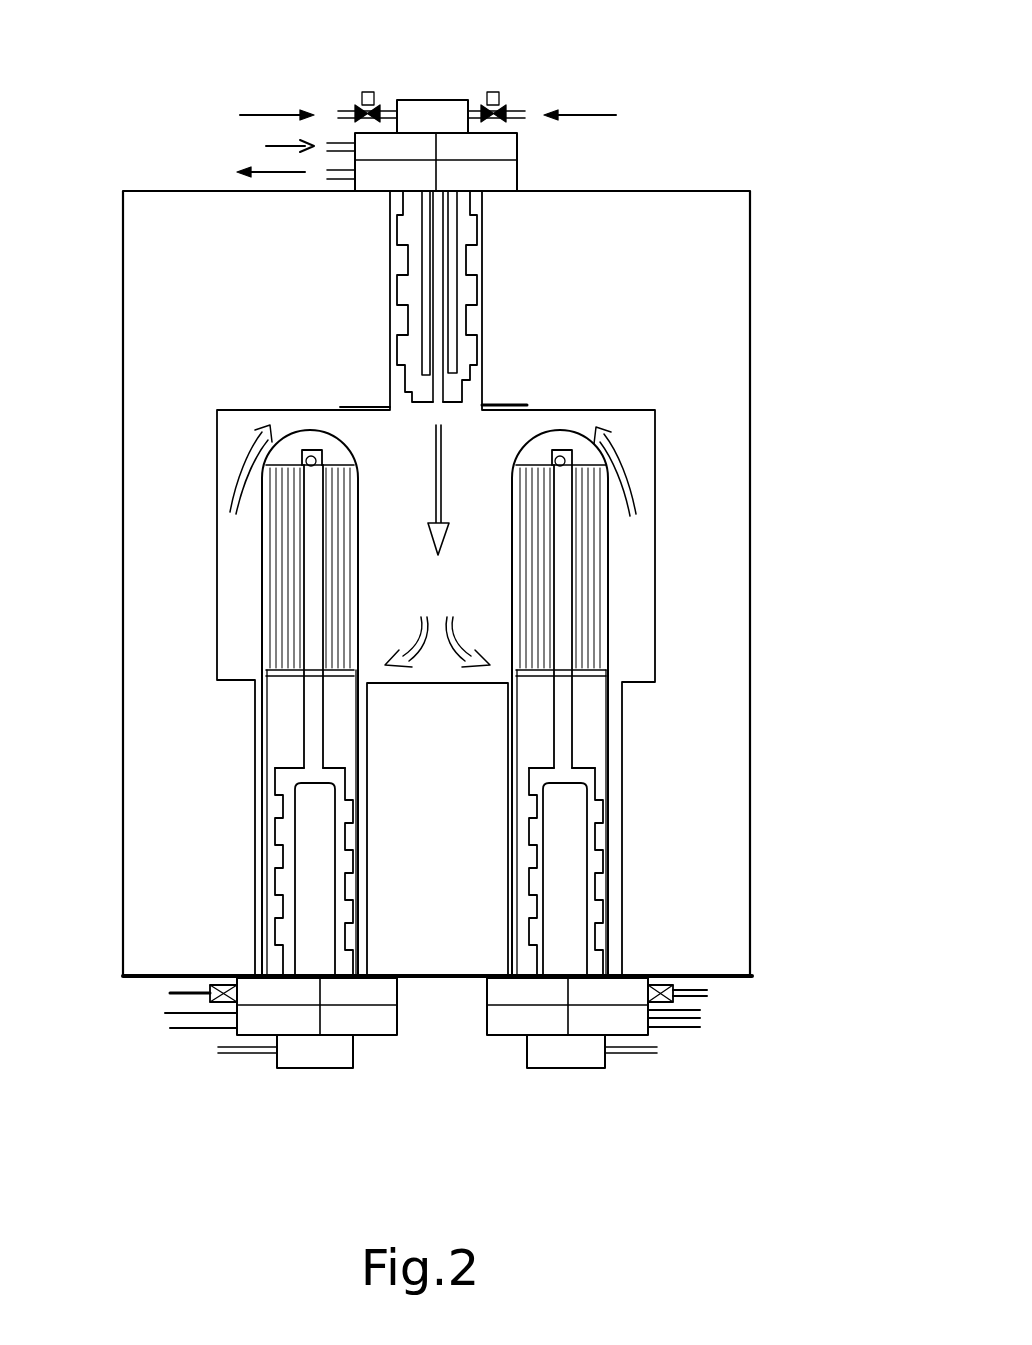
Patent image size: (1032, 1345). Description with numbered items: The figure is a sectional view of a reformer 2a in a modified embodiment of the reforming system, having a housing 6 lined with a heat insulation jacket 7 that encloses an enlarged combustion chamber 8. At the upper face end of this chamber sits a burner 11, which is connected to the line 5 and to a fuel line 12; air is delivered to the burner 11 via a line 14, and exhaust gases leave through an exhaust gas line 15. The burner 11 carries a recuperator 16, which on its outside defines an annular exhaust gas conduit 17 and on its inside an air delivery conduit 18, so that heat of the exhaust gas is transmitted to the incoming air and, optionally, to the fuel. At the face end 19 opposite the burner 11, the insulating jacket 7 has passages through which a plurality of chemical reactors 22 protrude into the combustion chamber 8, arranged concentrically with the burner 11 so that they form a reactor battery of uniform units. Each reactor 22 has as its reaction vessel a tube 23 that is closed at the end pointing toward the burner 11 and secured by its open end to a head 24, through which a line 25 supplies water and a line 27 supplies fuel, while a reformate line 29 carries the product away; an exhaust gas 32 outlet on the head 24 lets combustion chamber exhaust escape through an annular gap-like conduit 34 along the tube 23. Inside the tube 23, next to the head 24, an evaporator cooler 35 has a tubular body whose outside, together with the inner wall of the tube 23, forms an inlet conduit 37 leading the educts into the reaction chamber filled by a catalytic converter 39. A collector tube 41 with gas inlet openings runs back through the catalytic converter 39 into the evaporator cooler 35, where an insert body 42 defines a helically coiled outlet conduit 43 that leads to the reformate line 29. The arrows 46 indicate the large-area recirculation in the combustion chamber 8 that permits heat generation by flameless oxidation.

The reformer 2a is at (797, 268).
The line 5 is at (520, 100).
The housing 6 is at (750, 388).
The heat insulation jacket 7 is at (648, 318).
The combustion chamber 8 is at (480, 585).
The burner 11 is at (448, 98).
The fuel line 12 is at (353, 100).
The line 14 is at (327, 152).
The exhaust gas line 15 is at (333, 180).
The recuperator 16 is at (472, 290).
The annular exhaust gas conduit 17 is at (474, 330).
The air delivery conduit 18 is at (460, 388).
The face end 19 is at (388, 411).
The chemical reactor 22 is at (364, 527).
The tube 23 is at (262, 600).
The head 24 is at (325, 1075).
The line 25 is at (178, 1030).
The line 27 is at (165, 1013).
The reformate line 29 is at (247, 1053).
The exhaust gas 32 is at (165, 995).
The annular gap-like conduit 34 is at (437, 863).
The evaporator cooler 35 is at (280, 863).
The inlet conduit 37 is at (350, 905).
The catalytic converter 39 is at (683, 525).
The collector tube 41 is at (327, 722).
The insert body 42 is at (303, 856).
The outlet conduit 43 is at (343, 937).
The arrows 46 is at (227, 478).